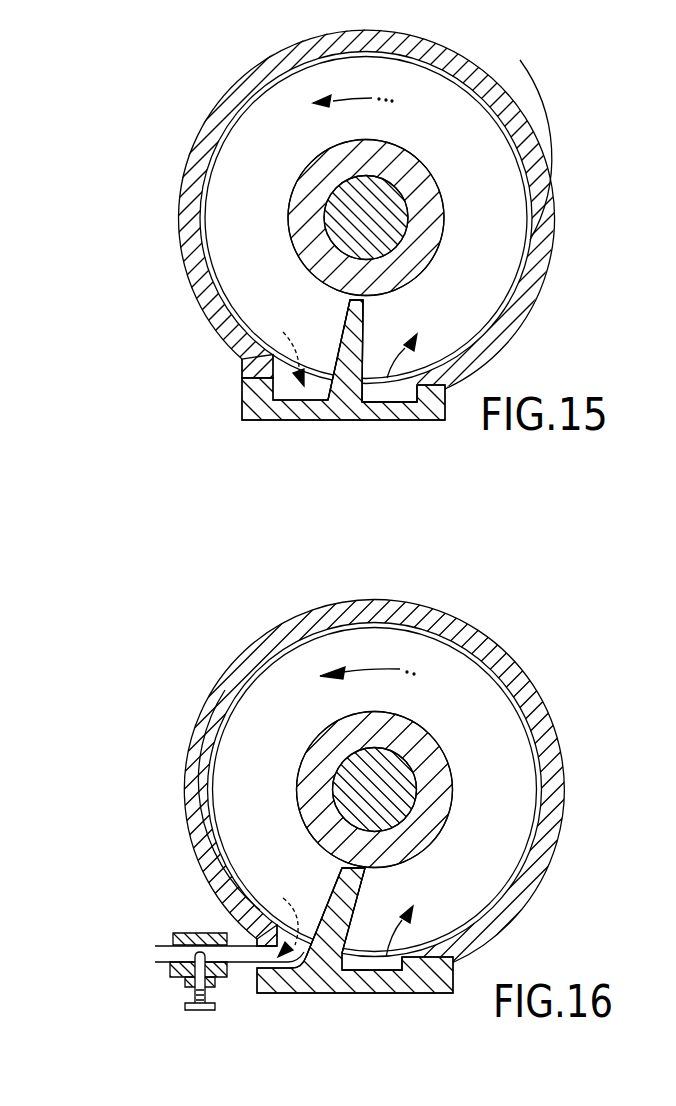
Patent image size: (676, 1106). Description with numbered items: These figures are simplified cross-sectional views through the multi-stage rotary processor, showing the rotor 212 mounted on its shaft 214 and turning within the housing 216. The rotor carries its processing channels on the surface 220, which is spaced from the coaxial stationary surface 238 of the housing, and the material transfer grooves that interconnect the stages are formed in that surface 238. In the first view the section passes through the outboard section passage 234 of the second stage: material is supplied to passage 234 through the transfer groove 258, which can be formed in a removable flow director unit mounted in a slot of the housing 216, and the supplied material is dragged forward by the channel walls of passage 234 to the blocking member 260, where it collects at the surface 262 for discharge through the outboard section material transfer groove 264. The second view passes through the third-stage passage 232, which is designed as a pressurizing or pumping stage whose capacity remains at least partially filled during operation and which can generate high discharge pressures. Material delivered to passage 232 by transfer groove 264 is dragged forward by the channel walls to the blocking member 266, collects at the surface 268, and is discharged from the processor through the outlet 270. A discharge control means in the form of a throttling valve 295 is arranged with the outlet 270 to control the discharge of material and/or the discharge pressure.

In FIG. 15, the rotor 212 is at (420, 250).
In FIG. 16, the rotor 212 is at (423, 830).
In FIG. 15, the shaft 214 is at (385, 190).
In FIG. 16, the shaft 214 is at (403, 773).
In FIG. 15, the housing 216 is at (210, 312).
In FIG. 16, the housing 216 is at (256, 648).
In FIG. 15, the surface 220 is at (209, 256).
In FIG. 16, the surface 220 is at (213, 795).
In FIG. 16, the passage 232 is at (248, 713).
In FIG. 15, the passage 234 is at (232, 180).
In FIG. 15, the surface 238 is at (520, 189).
In FIG. 16, the surface 238 is at (228, 830).
In FIG. 15, the transfer groove 258 is at (403, 398).
In FIG. 15, the blocking member 260 is at (351, 402).
In FIG. 15, the surface 262 is at (342, 328).
In FIG. 15, the outboard section material transfer groove 264 is at (278, 390).
In FIG. 16, the outboard section material transfer groove 264 is at (360, 965).
In FIG. 16, the blocking member 266 is at (362, 905).
In FIG. 16, the surface 268 is at (338, 888).
In FIG. 16, the outlet 270 is at (283, 963).
In FIG. 16, the throttling valve 295 is at (190, 932).